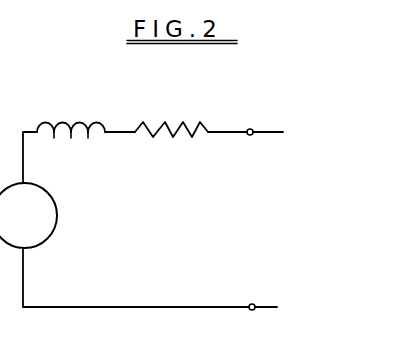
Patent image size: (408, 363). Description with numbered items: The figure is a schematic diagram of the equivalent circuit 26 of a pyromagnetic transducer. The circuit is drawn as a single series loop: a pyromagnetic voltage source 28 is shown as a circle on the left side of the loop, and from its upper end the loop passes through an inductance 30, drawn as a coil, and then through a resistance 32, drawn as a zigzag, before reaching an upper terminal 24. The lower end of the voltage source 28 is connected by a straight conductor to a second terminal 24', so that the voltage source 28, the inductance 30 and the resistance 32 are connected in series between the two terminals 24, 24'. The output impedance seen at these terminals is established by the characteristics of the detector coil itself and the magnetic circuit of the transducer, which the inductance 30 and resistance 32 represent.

The output terminal 24 is at (281, 135).
The output terminal 24' is at (281, 310).
The equivalent circuit 26 is at (160, 221).
The pyromagnetic voltage source 28 is at (57, 215).
The inductance 30 is at (65, 123).
The resistance 32 is at (167, 122).